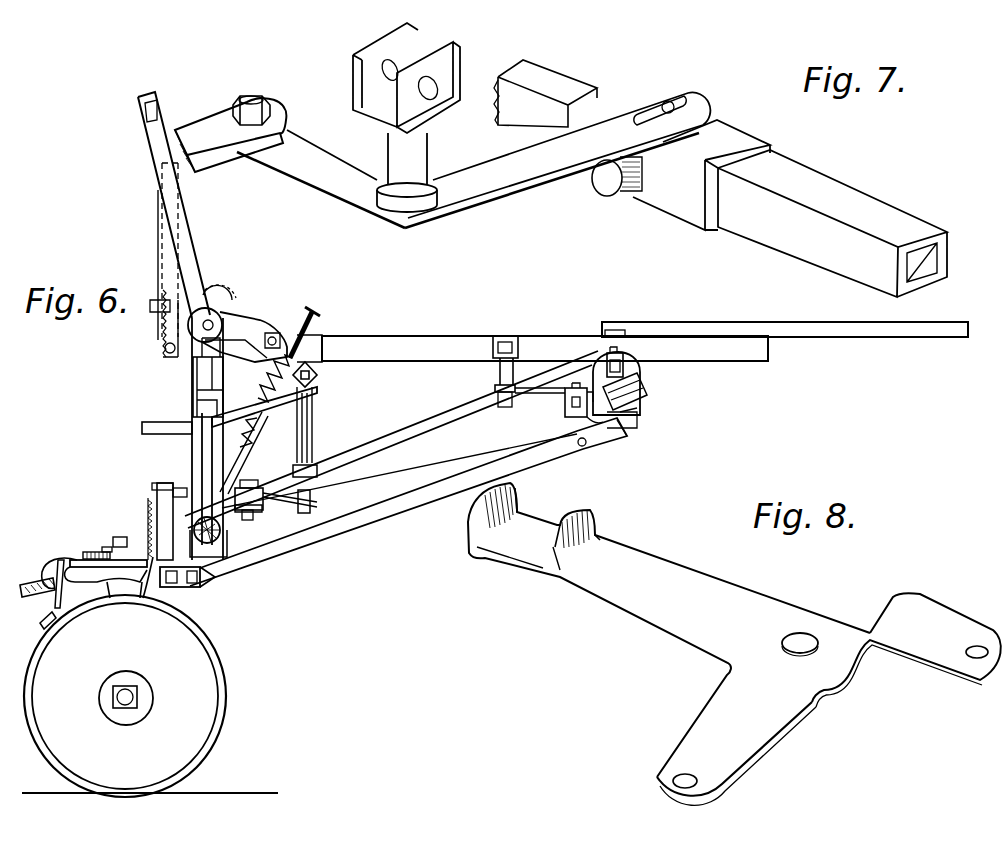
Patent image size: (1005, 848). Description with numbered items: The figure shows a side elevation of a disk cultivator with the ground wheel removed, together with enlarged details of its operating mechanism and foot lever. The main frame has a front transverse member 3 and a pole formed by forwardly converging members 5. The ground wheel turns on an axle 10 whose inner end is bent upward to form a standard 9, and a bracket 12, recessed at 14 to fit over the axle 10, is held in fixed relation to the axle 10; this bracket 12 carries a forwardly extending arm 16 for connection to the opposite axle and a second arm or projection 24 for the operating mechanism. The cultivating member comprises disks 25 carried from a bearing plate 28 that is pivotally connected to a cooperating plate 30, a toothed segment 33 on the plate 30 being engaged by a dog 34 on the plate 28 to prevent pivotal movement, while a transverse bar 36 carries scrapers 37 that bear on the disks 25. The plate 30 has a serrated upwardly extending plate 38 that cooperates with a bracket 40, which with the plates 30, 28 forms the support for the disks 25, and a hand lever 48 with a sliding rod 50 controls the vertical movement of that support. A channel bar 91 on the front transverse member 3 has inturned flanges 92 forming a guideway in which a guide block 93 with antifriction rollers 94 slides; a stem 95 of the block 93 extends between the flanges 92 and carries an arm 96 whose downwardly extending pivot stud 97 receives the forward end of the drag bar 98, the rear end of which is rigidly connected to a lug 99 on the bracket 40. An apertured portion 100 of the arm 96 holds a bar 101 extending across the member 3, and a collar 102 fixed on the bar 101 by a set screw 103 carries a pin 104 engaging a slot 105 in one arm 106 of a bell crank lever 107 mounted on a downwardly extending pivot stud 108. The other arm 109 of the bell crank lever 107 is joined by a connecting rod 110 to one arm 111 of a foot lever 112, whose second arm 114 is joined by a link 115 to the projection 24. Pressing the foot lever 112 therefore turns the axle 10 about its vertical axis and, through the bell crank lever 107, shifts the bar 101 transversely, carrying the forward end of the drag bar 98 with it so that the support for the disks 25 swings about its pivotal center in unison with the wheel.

In FIG. 6, the front transverse member 3 is at (640, 357).
In FIG. 6, the forwardly converging members 5 is at (398, 344).
In FIG. 6, the upwardly extending standard 9 is at (216, 400).
In FIG. 6, the axle 10 is at (222, 530).
In FIG. 6, the bracket 12 is at (192, 417).
In FIG. 6, the recess 14 is at (182, 588).
In FIG. 6, the arm 16 is at (316, 387).
In FIG. 6, the second arm or projection 24 is at (270, 478).
In FIG. 6, the disks 25 is at (220, 672).
In FIG. 6, the bearing plate 28 is at (120, 582).
In FIG. 6, the cooperating bearing plate 30 is at (117, 550).
In FIG. 6, the toothed segment 33 is at (100, 550).
In FIG. 6, the dog or pawl 34 is at (92, 550).
In FIG. 6, the transverse bar 36 is at (50, 594).
In FIG. 6, the scrapers 37 is at (43, 626).
In FIG. 6, the upwardly extending plate 38 is at (148, 503).
In FIG. 6, the bracket 40 is at (155, 565).
In FIG. 6, the hand lever 48 is at (263, 327).
In FIG. 6, the rod 50 is at (312, 327).
In FIG. 6, the channel bar 91 is at (640, 380).
In FIG. 6, the flanges 92 is at (640, 410).
In FIG. 6, the guide block 93 is at (620, 393).
In FIG. 6, the antifriction rollers 94 is at (620, 377).
In FIG. 6, the stem 95 is at (630, 413).
In FIG. 6, the arm 96 is at (617, 423).
In FIG. 6, the pivot stud 97 is at (583, 432).
In FIG. 6, the drag bar 98 is at (490, 473).
In FIG. 6, the lug 99 is at (213, 580).
In FIG. 6, the apertured portion 100 is at (577, 418).
In FIG. 7, the bar or rod 101 is at (832, 187).
In FIG. 6, the bar or rod 101 is at (566, 407).
In FIG. 7, the sleeve or collar 102 is at (747, 137).
In FIG. 7, the set screw 103 is at (607, 187).
In FIG. 7, the pin or projection 104 is at (688, 98).
In FIG. 7, the slot 105 is at (648, 107).
In FIG. 7, the arm 106 is at (605, 120).
In FIG. 6, the arm 106 is at (563, 384).
In FIG. 7, the bell crank lever 107 is at (408, 225).
In FIG. 6, the bell crank lever 107 is at (494, 389).
In FIG. 7, the pivot stud 108 is at (428, 157).
In FIG. 6, the pivot stud 108 is at (497, 371).
In FIG. 7, the arm 109 is at (317, 170).
In FIG. 7, the link or connecting rod 110 is at (210, 120).
In FIG. 6, the link or connecting rod 110 is at (350, 453).
In FIG. 8, the arm 111 is at (943, 583).
In FIG. 6, the arm 111 is at (290, 473).
In FIG. 8, the foot lever 112 is at (650, 603).
In FIG. 8, the second arm 114 is at (713, 693).
In FIG. 6, the link 115 is at (262, 512).